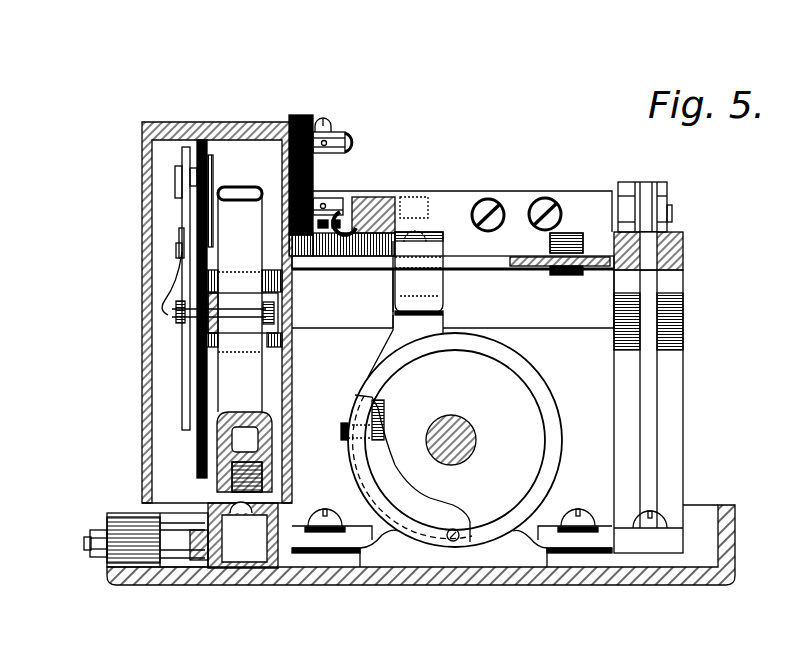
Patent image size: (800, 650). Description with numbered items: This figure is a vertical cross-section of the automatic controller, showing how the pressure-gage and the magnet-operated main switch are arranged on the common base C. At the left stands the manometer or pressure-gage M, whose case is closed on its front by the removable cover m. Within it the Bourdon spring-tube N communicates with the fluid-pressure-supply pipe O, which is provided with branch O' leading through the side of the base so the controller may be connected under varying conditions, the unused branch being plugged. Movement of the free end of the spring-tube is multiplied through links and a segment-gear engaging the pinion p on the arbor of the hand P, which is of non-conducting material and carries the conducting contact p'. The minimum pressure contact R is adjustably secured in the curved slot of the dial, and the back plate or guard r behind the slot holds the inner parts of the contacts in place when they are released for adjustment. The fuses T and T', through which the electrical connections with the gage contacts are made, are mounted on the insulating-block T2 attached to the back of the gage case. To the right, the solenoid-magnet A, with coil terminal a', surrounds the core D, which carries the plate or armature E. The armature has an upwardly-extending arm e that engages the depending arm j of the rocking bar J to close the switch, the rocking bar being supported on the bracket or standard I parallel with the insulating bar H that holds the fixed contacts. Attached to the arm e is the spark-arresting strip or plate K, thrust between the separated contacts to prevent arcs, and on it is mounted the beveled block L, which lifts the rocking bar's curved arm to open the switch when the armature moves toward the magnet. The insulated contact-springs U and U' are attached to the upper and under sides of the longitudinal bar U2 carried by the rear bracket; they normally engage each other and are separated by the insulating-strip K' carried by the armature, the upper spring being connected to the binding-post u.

The base C is at (465, 580).
The manometer or pressure-gage M is at (217, 299).
The hand or index P is at (182, 352).
The back plate or guard r is at (214, 162).
The minimum pressure contact R is at (175, 180).
The contact p' is at (171, 230).
The removable cover m is at (152, 318).
The Bourdon spring-tube N is at (244, 339).
The pinion p is at (227, 308).
The insulating-block T2 is at (305, 114).
The fuse T is at (338, 130).
The fuse T' is at (342, 202).
The rocking bar J is at (450, 196).
The block L is at (432, 258).
The strip or plate K is at (453, 292).
The depending arm j is at (419, 273).
The upwardly-extending arm e is at (392, 290).
The bar of insulating material H is at (528, 298).
The insulating-strip K' is at (560, 285).
The upper contact-spring U is at (571, 227).
The lower contact-spring U' is at (572, 288).
The binding-post u is at (646, 210).
The longitudinal bar U2 is at (684, 256).
The bracket or standard I is at (615, 403).
The plate or armature E is at (455, 440).
The core D is at (478, 441).
The solenoid-magnet A is at (368, 468).
The terminal a' is at (342, 419).
The fluid-pressure-supply pipe O is at (243, 535).
The branch O' is at (146, 540).